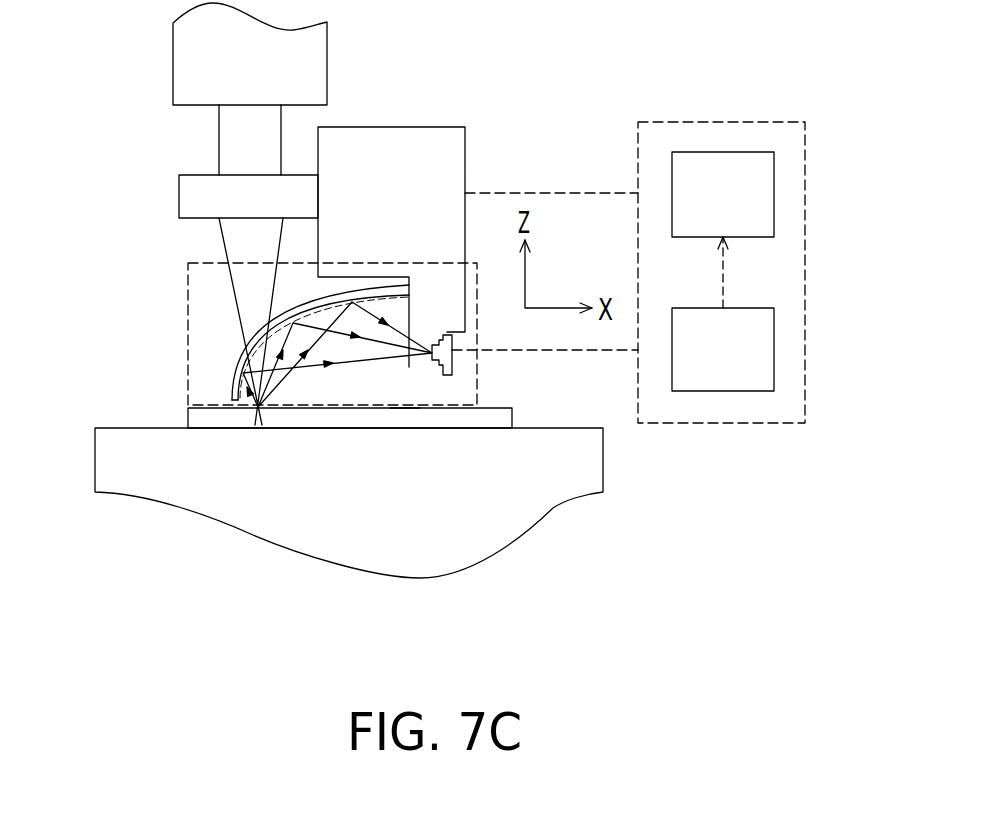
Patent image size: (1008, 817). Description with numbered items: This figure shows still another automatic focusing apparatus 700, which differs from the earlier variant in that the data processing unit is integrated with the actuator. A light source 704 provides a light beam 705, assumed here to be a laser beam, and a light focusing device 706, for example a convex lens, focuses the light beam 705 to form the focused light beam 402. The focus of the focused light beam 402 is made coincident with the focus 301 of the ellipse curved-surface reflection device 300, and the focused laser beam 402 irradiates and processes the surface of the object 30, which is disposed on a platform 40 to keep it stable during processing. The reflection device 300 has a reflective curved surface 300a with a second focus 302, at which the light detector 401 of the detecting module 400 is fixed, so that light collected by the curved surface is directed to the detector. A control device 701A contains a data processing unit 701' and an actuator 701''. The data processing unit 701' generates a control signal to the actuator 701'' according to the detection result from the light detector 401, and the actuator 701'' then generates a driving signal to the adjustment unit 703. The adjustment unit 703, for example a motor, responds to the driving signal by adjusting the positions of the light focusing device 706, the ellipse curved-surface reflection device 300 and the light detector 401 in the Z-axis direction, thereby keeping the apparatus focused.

The light source 704 is at (212, 63).
The light beam 705 is at (242, 145).
The light focusing device 706 is at (210, 202).
The adjustment unit 703 is at (392, 152).
The focused light beam 402 is at (243, 245).
The ellipse curved-surface reflection device 300 is at (233, 383).
The reflective surface 300a is at (257, 328).
The focus 301 is at (262, 425).
The focus 302 is at (400, 420).
The object 30 is at (465, 418).
The platform 40 is at (163, 467).
The light detector 401 is at (445, 355).
The detecting module 400 is at (477, 379).
The focusing apparatus 700 is at (655, 453).
The control device 701A is at (757, 122).
The actuator 701'' is at (771, 183).
The data processing unit 701' is at (768, 314).